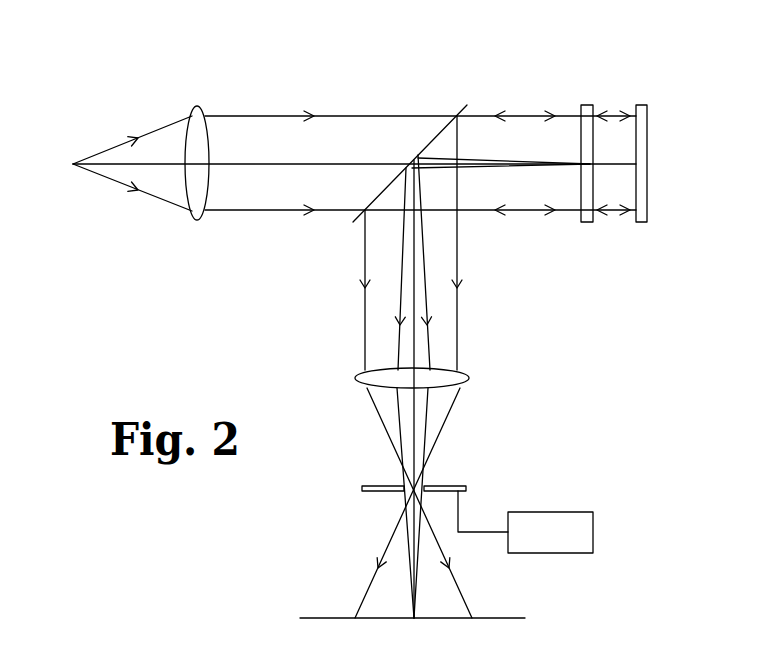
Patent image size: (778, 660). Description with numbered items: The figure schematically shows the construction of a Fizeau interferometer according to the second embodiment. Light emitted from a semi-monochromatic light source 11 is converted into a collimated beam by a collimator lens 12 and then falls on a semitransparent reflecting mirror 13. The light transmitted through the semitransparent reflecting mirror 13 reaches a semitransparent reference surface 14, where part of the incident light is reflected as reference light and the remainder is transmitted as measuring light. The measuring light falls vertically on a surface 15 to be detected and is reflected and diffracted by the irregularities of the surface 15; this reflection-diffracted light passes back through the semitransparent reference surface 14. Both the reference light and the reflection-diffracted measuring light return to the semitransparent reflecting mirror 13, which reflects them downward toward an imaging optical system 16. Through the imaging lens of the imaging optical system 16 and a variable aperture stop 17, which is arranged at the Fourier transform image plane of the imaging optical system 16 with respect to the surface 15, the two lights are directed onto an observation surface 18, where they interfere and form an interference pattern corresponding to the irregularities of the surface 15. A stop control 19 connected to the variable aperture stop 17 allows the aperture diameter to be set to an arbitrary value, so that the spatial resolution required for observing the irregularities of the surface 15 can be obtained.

The semi-monochromatic light source 11 is at (73, 163).
The collimator lens 12 is at (197, 105).
The semitransparent reflecting mirror 13 is at (462, 108).
The semitransparent reference surface 14 is at (593, 105).
The surface to be detected 15 is at (635, 110).
The imaging optical system 16 is at (463, 368).
The variable aperture stop 17 is at (453, 487).
The observation surface 18 is at (515, 617).
The stop control 19 is at (583, 512).